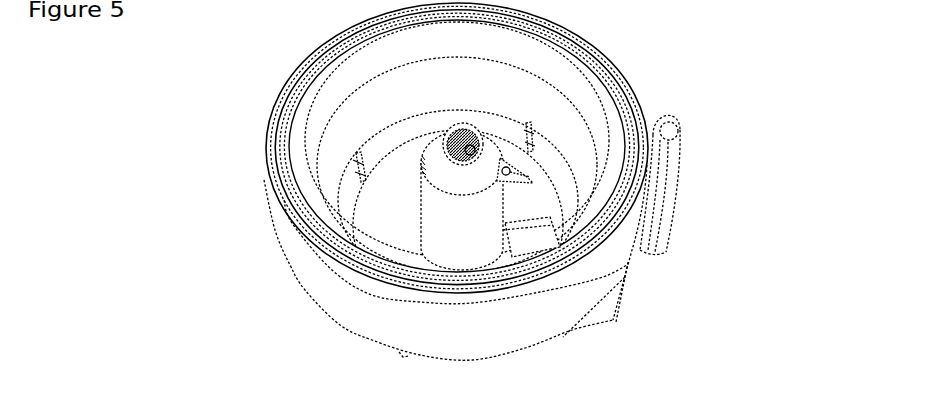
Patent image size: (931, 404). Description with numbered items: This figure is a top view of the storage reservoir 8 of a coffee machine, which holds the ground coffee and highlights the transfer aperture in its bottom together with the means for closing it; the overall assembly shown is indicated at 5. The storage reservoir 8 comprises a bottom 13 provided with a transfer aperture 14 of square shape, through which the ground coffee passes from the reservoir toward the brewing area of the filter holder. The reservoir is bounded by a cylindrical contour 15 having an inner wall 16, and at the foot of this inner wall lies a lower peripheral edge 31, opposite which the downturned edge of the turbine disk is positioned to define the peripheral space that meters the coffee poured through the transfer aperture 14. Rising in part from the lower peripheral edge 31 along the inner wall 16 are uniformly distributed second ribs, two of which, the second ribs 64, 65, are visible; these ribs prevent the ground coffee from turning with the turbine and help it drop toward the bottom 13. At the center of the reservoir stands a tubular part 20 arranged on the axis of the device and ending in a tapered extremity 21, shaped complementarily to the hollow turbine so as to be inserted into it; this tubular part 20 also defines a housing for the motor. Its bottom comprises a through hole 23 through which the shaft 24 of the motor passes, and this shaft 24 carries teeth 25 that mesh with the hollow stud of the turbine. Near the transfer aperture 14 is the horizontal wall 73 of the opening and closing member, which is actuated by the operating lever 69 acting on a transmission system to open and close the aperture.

The apparatus 5 is at (680, 39).
The storage reservoir 8 is at (599, 42).
The bottom 13 is at (353, 242).
The transfer aperture 14 is at (540, 222).
The cylindrical contour 15 is at (318, 283).
The inner wall 16 is at (330, 100).
The tubular part 20 is at (427, 220).
The tapered extremity 21 is at (436, 140).
The through hole 23 is at (470, 138).
The shaft 24 is at (462, 140).
The teeth 25 is at (478, 136).
The lower peripheral edge 31 is at (381, 163).
The second rib 64 is at (361, 163).
The second rib 65 is at (531, 133).
The operating lever 69 is at (680, 153).
The horizontal wall 73 is at (518, 238).